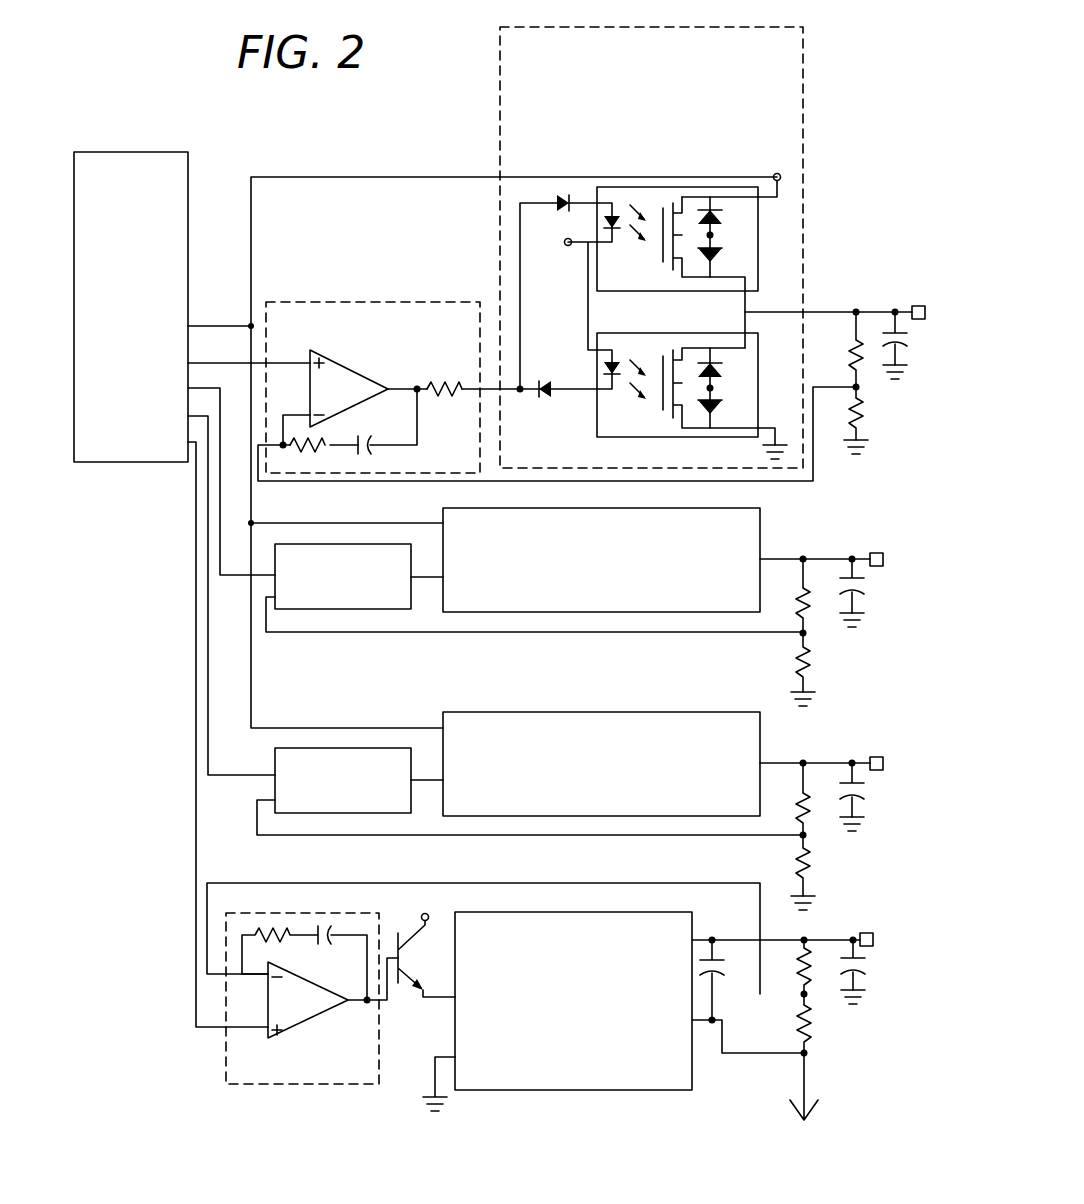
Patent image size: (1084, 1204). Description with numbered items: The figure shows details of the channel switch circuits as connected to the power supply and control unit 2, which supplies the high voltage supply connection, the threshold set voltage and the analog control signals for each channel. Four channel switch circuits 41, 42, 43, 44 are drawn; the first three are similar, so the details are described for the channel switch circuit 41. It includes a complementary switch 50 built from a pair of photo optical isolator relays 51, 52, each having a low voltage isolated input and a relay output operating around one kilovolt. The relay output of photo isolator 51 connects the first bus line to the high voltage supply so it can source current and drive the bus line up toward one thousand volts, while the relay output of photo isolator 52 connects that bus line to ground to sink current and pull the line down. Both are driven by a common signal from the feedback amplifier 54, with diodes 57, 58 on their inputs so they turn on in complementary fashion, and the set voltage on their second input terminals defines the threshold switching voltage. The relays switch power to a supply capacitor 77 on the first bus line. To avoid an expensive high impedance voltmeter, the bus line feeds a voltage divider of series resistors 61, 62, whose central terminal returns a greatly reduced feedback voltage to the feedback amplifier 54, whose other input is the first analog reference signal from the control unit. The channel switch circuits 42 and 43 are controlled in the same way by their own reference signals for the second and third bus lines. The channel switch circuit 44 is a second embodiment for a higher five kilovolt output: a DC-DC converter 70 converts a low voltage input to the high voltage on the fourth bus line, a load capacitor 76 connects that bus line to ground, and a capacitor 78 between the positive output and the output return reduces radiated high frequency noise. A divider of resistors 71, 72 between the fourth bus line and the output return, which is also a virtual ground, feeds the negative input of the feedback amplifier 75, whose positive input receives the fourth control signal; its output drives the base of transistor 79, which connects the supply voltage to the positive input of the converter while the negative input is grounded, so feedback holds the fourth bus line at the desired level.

The power supply and control unit 2 is at (131, 307).
The channel switch circuit 41 is at (822, 150).
The channel switch circuit 42 is at (784, 524).
The channel switch circuit 43 is at (696, 700).
The channel switch circuit 44 is at (706, 876).
The complementary switch 50 is at (652, 247).
The photo isolator relay 51 is at (672, 291).
The photo isolator relay 52 is at (672, 437).
The feedback amplifier 54 is at (557, 391).
The diode 57 is at (558, 200).
The diode 58 is at (548, 400).
The resistor 61 is at (850, 352).
The resistor 62 is at (850, 428).
The DC-DC converter 70 is at (573, 1001).
The resistor 71 is at (797, 962).
The resistor 72 is at (796, 1018).
The feedback amplifier 75 is at (312, 998).
The load capacitor 76 is at (845, 968).
The supply capacitor 77 is at (905, 338).
The capacitor 78 is at (728, 968).
The transistor 79 is at (412, 942).